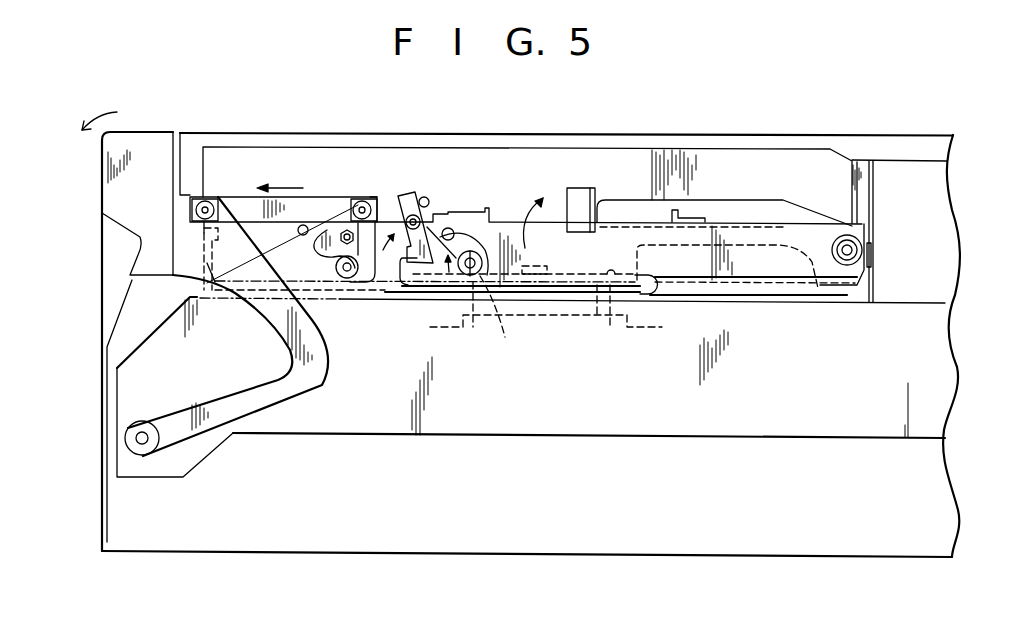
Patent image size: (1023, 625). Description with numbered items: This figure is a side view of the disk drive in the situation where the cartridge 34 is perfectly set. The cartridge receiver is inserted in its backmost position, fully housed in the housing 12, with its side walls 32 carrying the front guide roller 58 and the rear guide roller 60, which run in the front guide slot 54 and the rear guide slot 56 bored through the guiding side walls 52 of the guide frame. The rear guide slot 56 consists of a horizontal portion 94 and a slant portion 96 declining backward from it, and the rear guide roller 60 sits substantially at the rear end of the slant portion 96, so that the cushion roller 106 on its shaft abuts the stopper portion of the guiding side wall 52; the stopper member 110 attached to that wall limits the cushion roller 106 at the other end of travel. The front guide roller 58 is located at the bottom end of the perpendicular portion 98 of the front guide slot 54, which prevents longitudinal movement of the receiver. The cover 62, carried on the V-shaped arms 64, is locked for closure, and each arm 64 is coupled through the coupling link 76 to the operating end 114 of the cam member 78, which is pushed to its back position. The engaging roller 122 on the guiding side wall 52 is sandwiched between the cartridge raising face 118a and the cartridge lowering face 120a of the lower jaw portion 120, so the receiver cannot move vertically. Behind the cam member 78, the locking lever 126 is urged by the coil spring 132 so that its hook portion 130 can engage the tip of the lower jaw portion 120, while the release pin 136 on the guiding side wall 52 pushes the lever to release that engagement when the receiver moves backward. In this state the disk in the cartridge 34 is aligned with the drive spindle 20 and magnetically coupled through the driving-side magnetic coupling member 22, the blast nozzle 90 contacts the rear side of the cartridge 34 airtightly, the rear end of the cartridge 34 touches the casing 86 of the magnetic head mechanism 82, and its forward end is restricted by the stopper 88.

The housing 12 is at (450, 556).
The drive spindle 20 is at (548, 268).
The driving-side magnetic coupling member 22 is at (607, 328).
The side walls 32 is at (511, 224).
The cartridge 34 is at (205, 243).
The guiding side walls 52 is at (552, 150).
The front guide slot 54 is at (471, 326).
The rear guide slot 56 is at (752, 200).
The front guide roller 58 is at (473, 277).
The rear guide roller 60 is at (853, 286).
The cover 62 is at (103, 187).
The V-shaped arms 64 is at (210, 432).
The coupling link 76 is at (343, 197).
The cam member 78 is at (350, 278).
The magnetic head mechanism 82 is at (913, 160).
The casing 86 is at (940, 195).
The stopper 88 is at (200, 267).
The blast nozzles 90 is at (742, 278).
The horizontal portion 94 is at (708, 203).
The slant portion 96 is at (830, 232).
The perpendicular portion 98 is at (511, 318).
The cushion roller 106 is at (872, 268).
The stopper member 110 is at (597, 195).
The operating end 114 is at (373, 195).
The cartridge raising face 118a is at (338, 266).
The lower jaw portion 120 is at (305, 228).
The cartridge lowering face 120a is at (357, 273).
The engaging roller 122 is at (343, 280).
The locking lever 126 is at (414, 192).
The hook portion 130 is at (452, 292).
The coil spring 132 is at (452, 229).
The release pin 136 is at (429, 202).